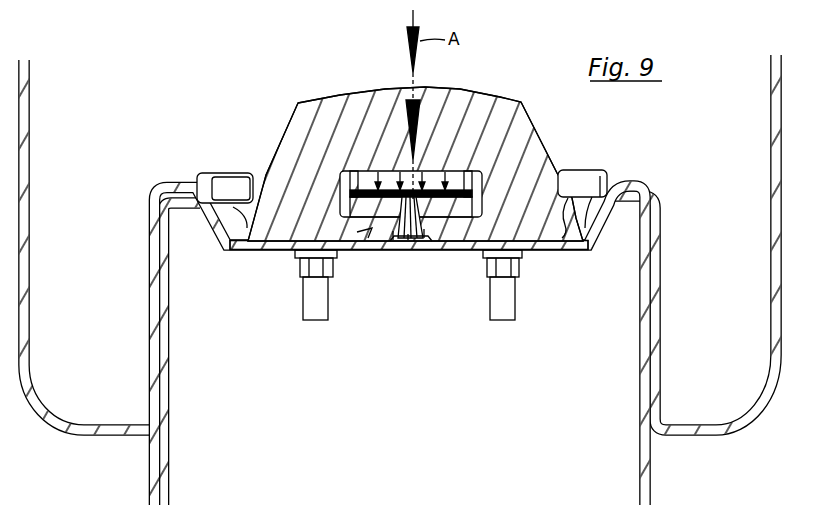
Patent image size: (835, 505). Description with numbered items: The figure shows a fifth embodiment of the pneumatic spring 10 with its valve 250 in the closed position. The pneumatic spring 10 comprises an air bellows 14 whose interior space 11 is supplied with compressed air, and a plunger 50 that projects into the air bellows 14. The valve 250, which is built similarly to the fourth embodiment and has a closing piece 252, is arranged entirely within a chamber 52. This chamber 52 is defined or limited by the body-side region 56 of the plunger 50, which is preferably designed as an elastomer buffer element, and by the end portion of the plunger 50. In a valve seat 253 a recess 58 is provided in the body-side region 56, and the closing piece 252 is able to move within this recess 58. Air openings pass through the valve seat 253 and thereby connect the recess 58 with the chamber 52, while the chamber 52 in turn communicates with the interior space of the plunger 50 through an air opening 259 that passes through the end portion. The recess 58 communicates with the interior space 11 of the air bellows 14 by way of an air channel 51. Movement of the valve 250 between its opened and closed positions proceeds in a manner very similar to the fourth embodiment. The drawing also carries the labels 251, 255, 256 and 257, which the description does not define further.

The pneumatic spring 10 is at (142, 466).
The interior space 11 is at (686, 164).
The air bellows 14 is at (770, 184).
The plunger 50 is at (638, 319).
The air channel 51 is at (421, 98).
The chamber 52 is at (306, 237).
The body-side region 56 is at (532, 134).
The recess 58 is at (370, 180).
The valve 250 is at (375, 225).
The circuit carrier 251 is at (401, 222).
The closing piece 252 is at (468, 176).
The valve seat 253 is at (520, 236).
The lead 255 is at (393, 231).
The connecting line 256 is at (408, 234).
The sensor stem 257 is at (430, 223).
The air opening 259 is at (424, 229).